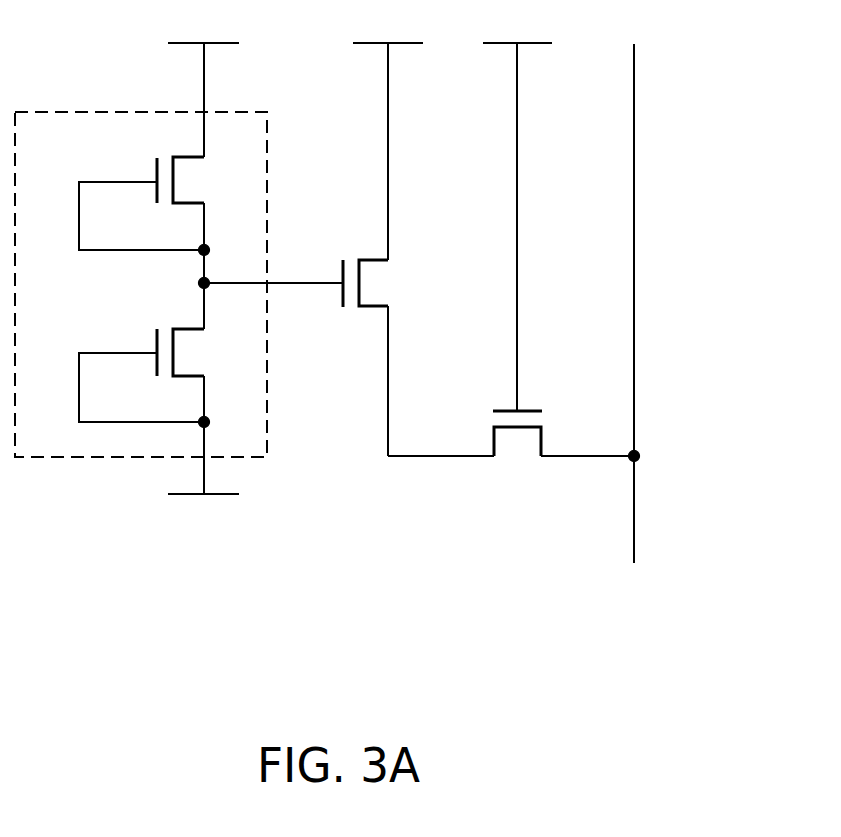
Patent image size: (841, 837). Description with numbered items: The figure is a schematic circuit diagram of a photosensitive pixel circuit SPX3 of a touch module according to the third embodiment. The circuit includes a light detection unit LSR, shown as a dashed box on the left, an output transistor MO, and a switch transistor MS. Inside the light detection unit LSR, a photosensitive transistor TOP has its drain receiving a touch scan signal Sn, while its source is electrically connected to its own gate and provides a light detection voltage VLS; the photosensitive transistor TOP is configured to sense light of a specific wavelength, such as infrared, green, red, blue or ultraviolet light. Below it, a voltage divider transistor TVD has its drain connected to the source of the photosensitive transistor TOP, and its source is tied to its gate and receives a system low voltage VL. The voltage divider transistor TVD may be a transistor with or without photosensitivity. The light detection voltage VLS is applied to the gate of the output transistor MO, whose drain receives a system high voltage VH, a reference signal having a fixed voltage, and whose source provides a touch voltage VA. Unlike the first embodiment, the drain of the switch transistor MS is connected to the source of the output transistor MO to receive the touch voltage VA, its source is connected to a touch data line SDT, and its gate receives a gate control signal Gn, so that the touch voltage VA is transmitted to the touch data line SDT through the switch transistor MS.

The touch scan signal Sn is at (203, 83).
The light detection unit LSR is at (80, 457).
The photosensitive transistor TOP is at (163, 220).
The voltage divider transistor TVD is at (163, 388).
The system low voltage VL is at (203, 517).
The light detection voltage VLS is at (271, 269).
The system high voltage VH is at (388, 134).
The output transistor MO is at (381, 358).
The touch voltage VA is at (441, 436).
The gate control signal Gn is at (517, 210).
The switch transistor MS is at (563, 456).
The touch data line SDT is at (634, 156).
The photosensitive pixel circuit SPX3 is at (758, 627).